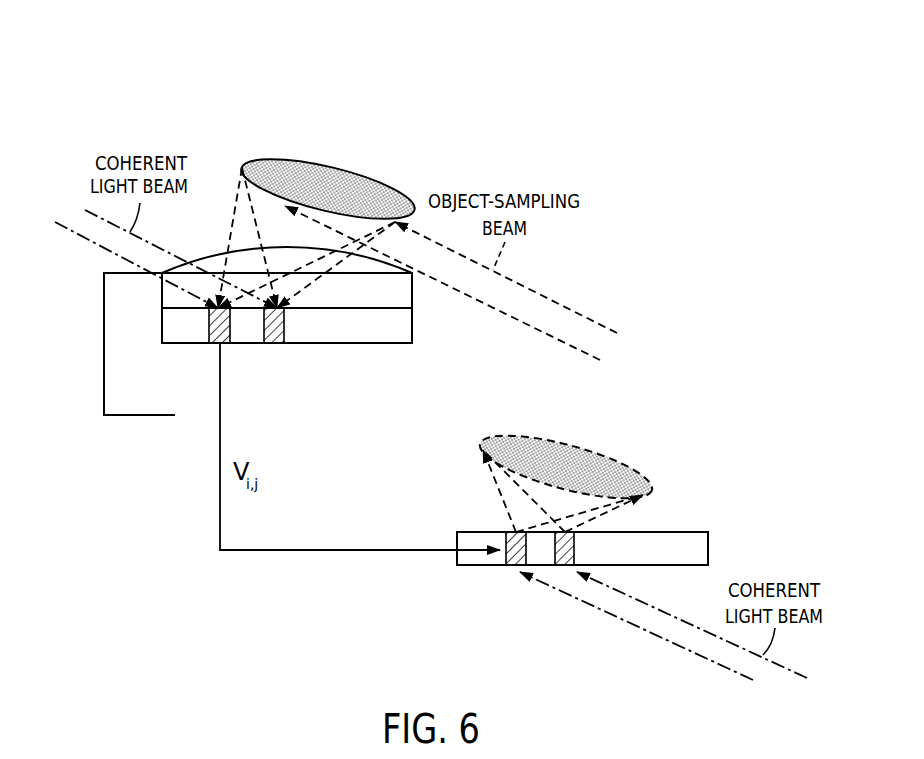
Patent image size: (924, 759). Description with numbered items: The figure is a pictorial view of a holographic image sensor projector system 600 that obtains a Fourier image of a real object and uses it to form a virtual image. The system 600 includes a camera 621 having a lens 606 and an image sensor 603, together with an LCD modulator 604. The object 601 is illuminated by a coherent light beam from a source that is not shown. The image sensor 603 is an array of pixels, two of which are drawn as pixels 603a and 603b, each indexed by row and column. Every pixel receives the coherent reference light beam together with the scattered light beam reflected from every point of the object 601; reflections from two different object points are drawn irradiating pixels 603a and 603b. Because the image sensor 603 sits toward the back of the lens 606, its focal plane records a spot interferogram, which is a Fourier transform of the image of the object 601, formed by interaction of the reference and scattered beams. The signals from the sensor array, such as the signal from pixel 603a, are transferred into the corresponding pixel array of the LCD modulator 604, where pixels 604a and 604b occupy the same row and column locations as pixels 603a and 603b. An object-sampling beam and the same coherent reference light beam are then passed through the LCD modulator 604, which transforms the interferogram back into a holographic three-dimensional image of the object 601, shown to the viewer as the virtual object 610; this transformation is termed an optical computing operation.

The holographic image sensor projector system 600 is at (160, 85).
The object 601 is at (373, 156).
The image sensor 603 is at (368, 334).
The pixel 603a is at (222, 336).
The pixel 603b is at (272, 336).
The lens 606 is at (213, 263).
The camera 621 is at (128, 372).
The LCD modulator 604 is at (698, 550).
The pixel 604a is at (515, 566).
The pixel 604b is at (565, 566).
The virtual object 610 is at (625, 433).